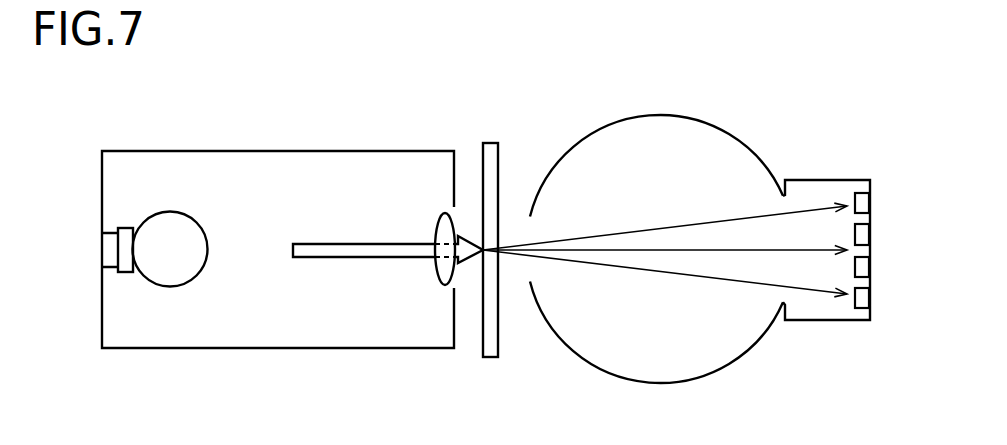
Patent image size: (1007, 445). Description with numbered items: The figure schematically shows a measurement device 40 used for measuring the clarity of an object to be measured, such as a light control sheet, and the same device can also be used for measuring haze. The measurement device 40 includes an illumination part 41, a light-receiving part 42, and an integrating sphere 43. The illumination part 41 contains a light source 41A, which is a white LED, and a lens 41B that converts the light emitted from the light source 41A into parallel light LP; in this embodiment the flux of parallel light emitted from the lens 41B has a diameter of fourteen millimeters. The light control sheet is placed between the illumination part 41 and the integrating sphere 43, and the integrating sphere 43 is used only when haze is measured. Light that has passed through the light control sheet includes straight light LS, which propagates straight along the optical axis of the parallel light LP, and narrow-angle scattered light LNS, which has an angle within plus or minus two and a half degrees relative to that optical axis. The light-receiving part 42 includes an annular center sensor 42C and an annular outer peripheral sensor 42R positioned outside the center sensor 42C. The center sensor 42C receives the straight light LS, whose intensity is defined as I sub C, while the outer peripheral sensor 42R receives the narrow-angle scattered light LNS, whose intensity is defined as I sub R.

The measurement device 40 is at (795, 93).
The illumination part 41 is at (278, 150).
The light source 41A is at (168, 288).
The lens 41B is at (437, 273).
The parallel light LP is at (461, 239).
The straight light LS is at (720, 247).
The narrow-angle scattered light LNS is at (673, 225).
The light-receiving part 42 is at (829, 178).
The outer peripheral sensor 42R is at (872, 200).
The center sensor 42C is at (872, 233).
The integrating sphere 43 is at (663, 383).